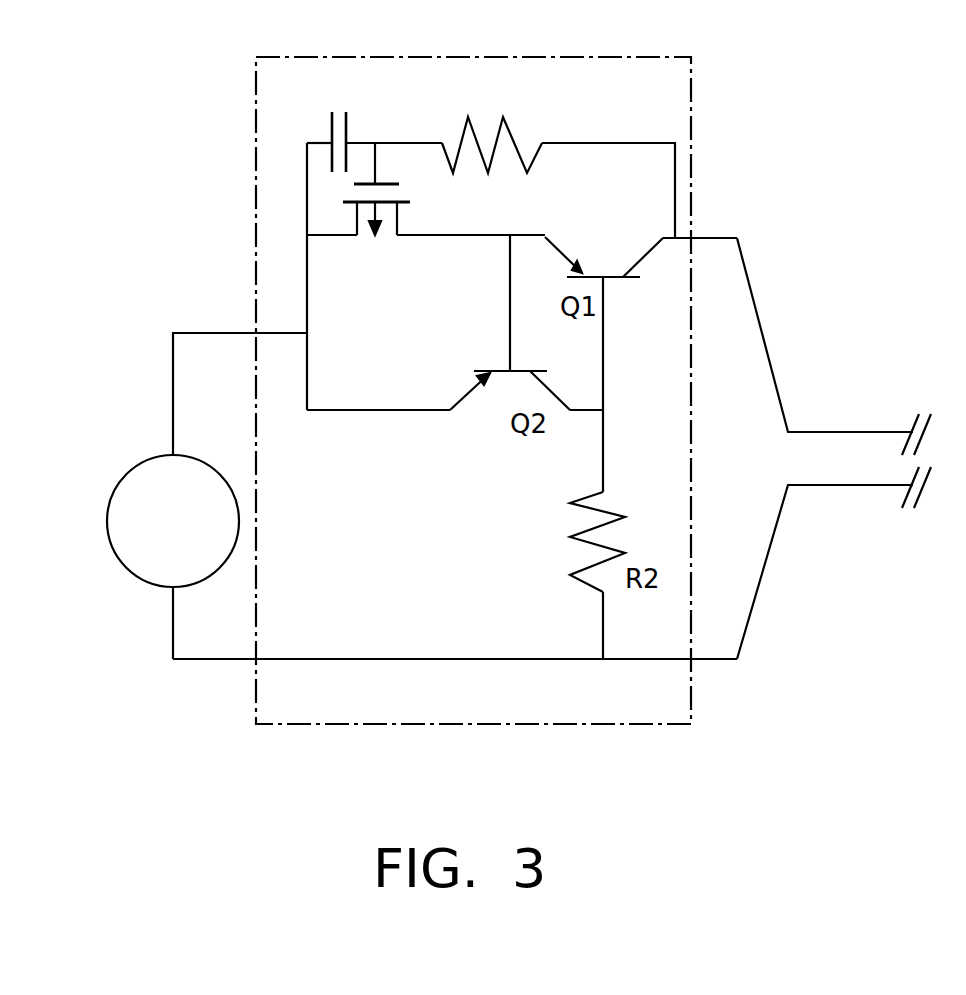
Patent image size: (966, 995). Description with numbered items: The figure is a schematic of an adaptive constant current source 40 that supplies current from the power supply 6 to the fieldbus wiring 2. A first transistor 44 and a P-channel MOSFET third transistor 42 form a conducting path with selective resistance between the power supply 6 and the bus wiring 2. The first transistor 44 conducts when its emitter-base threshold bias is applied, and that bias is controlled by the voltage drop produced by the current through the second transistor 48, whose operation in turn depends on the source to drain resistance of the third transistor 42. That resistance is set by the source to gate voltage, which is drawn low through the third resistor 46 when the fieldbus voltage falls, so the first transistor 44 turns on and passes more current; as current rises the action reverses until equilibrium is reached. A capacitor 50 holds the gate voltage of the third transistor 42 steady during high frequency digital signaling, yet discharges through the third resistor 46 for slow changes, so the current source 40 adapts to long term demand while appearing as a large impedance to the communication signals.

The fieldbus wiring 2 is at (783, 347).
The power supply 6 is at (110, 498).
The current source 40 is at (691, 122).
The third transistor (Q3) 42 is at (342, 198).
The first transistor (Q1) 44 is at (645, 257).
The resistor (R3) 46 is at (466, 122).
The second transistor (Q2) 48 is at (510, 373).
The capacitor (C1) 50 is at (330, 128).